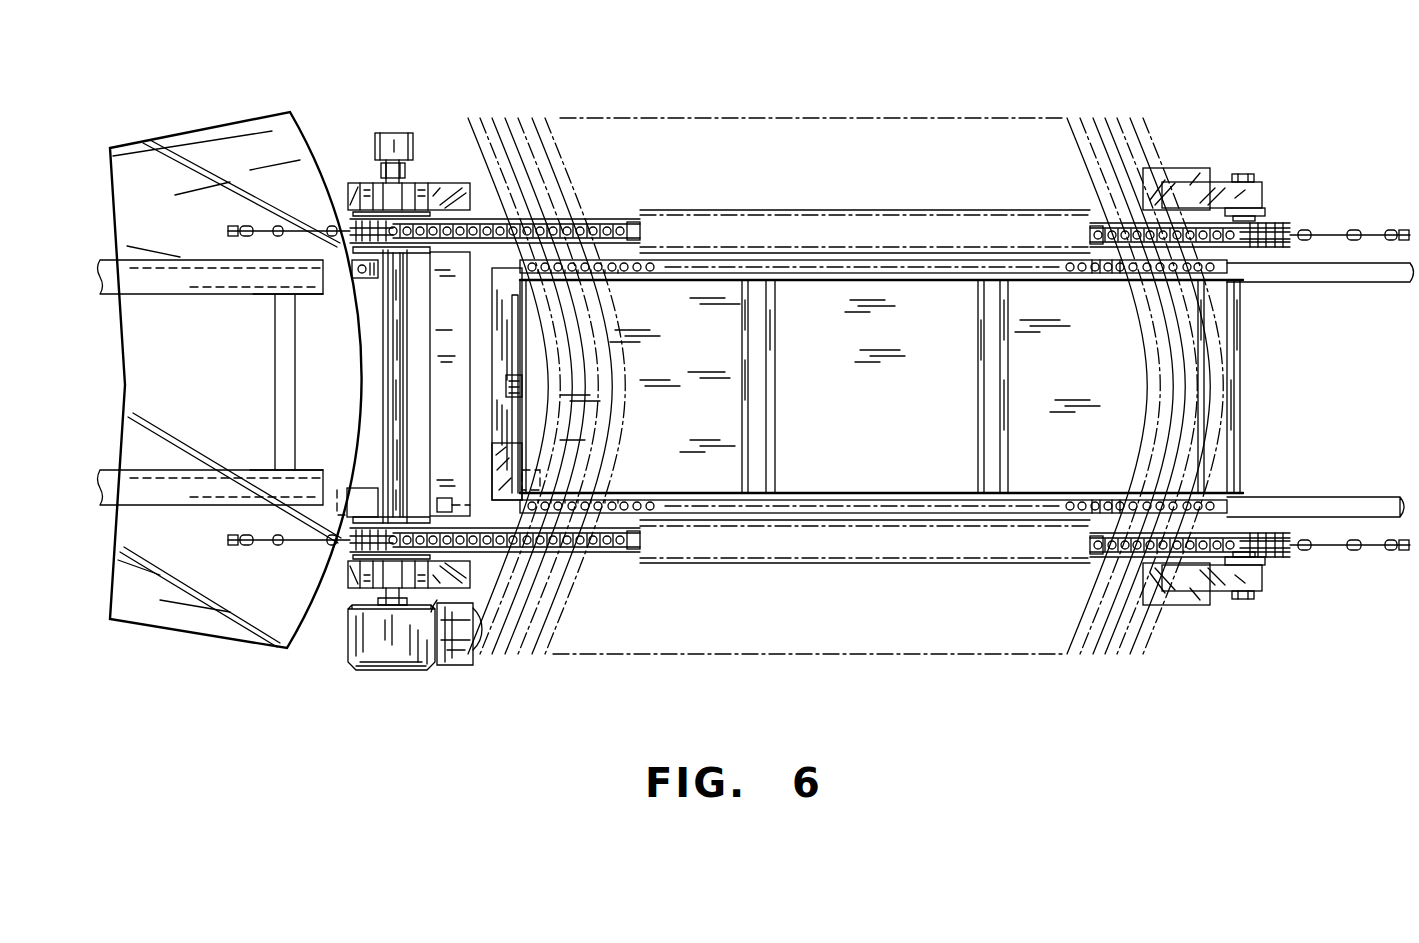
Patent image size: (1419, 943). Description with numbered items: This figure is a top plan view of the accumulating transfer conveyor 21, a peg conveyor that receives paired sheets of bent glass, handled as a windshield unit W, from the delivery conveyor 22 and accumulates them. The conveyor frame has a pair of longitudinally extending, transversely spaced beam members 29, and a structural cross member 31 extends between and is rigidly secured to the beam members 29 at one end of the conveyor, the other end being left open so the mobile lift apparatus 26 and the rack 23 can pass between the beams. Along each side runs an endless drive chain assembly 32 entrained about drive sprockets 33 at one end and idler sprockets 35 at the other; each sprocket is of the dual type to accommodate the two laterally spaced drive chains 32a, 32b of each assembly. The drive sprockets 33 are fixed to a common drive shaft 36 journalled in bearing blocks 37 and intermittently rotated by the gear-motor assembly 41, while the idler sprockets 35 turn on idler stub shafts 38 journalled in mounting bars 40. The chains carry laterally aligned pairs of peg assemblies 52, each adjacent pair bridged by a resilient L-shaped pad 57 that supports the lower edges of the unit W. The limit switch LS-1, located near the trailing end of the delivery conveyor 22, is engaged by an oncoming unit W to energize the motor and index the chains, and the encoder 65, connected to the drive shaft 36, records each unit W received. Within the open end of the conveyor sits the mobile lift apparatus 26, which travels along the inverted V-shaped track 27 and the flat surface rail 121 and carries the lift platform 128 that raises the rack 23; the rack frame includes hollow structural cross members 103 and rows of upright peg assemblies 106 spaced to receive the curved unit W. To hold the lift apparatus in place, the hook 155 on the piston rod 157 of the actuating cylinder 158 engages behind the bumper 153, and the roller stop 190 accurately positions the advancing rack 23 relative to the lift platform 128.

The accumulating transfer conveyor 21 is at (1110, 100).
The delivery conveyor 22 is at (104, 297).
The rack 23 is at (1242, 357).
The mobile lift apparatus 26 is at (506, 264).
The tracks 27 is at (1371, 495).
The beam members 29 is at (757, 210).
The structural cross member 31 is at (436, 399).
The drive chain assemblies 32 is at (1082, 214).
The drive chain 32a is at (1107, 222).
The drive chain 32b is at (1096, 268).
The drive sprockets 33 is at (408, 254).
The idler sprockets 35 is at (1262, 212).
The drive shaft 36 is at (389, 352).
The bearing blocks 37 is at (386, 197).
The idler stub shafts 38 is at (1244, 175).
The mounting bars 40 is at (1222, 195).
The gear-motor assembly 41 is at (411, 685).
The peg assemblies 52 is at (243, 224).
The L-shaped pad 57 is at (1090, 232).
The encoder 65 is at (391, 138).
The structural cross members 103 is at (766, 442).
The peg assemblies 106 is at (656, 280).
The flat surface rail 121 is at (1386, 284).
The lift platform 128 is at (881, 467).
The bumper 153 is at (510, 465).
The hook 155 is at (528, 482).
The piston rod 157 is at (421, 503).
The actuating cylinder 158 is at (361, 497).
The roller stop 190 is at (506, 386).
The windshield unit W is at (216, 127).
The limit switch LS-1 is at (355, 279).